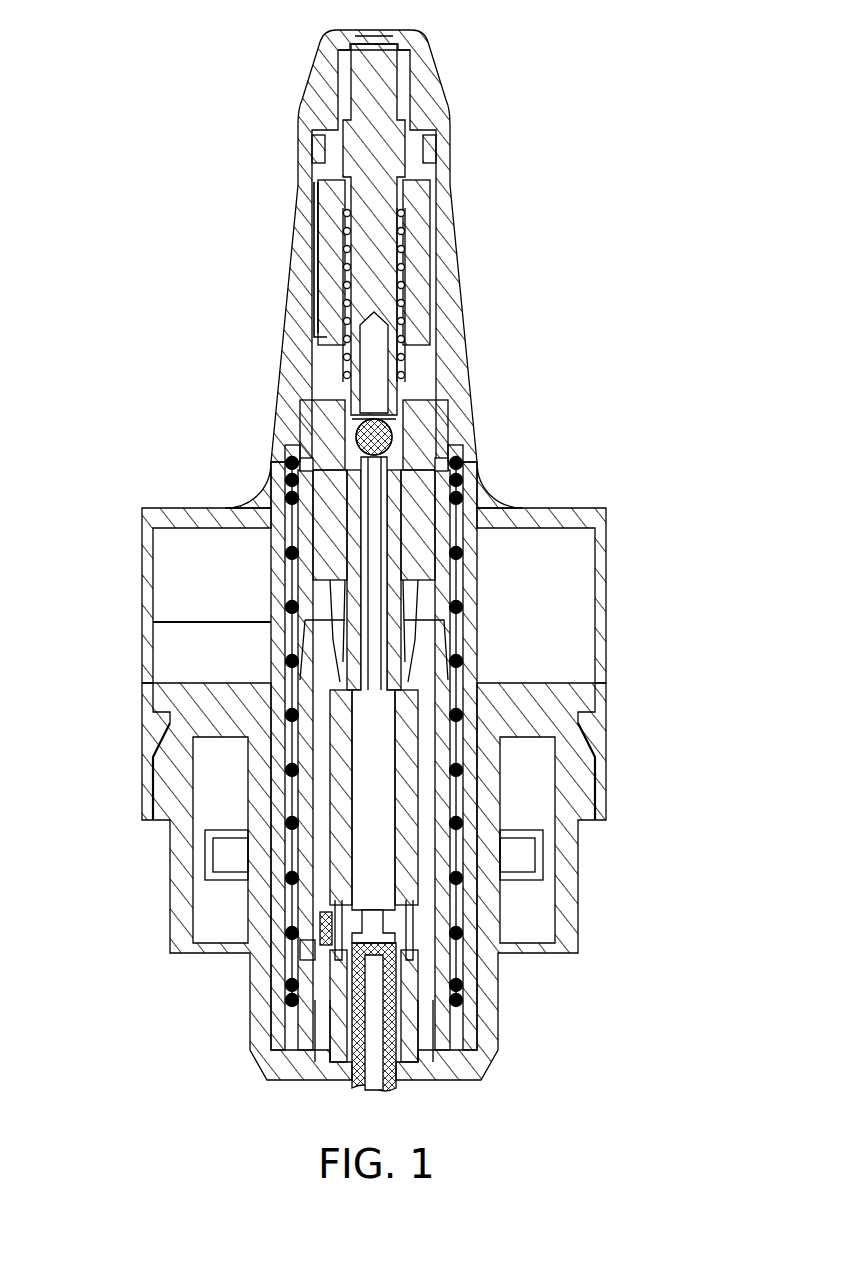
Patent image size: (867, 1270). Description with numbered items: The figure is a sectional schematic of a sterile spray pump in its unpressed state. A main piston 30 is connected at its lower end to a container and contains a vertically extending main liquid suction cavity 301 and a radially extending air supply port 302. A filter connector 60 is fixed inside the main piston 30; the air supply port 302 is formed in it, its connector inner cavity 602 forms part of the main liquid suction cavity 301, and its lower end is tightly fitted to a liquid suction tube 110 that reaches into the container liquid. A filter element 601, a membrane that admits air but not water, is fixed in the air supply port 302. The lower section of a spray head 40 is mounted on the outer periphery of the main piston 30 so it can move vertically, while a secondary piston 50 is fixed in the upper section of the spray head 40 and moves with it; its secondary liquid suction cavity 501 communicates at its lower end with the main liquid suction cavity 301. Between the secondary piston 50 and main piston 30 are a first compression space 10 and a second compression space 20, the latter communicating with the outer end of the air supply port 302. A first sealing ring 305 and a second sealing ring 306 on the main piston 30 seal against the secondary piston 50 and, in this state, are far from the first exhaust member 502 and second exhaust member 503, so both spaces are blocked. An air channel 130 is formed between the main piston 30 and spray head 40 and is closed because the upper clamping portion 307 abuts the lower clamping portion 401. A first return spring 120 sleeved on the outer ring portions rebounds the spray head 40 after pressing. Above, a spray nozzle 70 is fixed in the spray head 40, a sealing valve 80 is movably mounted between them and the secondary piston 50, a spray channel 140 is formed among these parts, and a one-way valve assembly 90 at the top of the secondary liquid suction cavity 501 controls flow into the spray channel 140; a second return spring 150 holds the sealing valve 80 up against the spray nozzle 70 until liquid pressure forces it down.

The first compression space 10 is at (462, 470).
The second compression space 20 is at (427, 790).
The main piston 30 is at (500, 985).
The spray head 40 is at (455, 322).
The secondary piston 50 is at (455, 553).
The filter connector 60 is at (418, 1022).
The spray nozzle 70 is at (402, 62).
The sealing valve 80 is at (385, 190).
The one-way valve assembly 90 is at (418, 437).
The liquid suction tube 110 is at (400, 1075).
The first return spring 120 is at (455, 607).
The air channel 130 is at (178, 622).
The spray channel 140 is at (313, 186).
The second return spring 150 is at (405, 262).
The main liquid suction cavity 301 is at (337, 1033).
The air supply port 302 is at (323, 930).
The first sealing ring 305 is at (305, 545).
The second sealing ring 306 is at (305, 632).
The upper clamping portion 307 is at (595, 700).
The lower clamping portion 401 is at (590, 733).
The secondary liquid suction cavity 501 is at (455, 503).
The first exhaust member 502 is at (290, 445).
The second exhaust member 503 is at (292, 400).
The filter element 601 is at (300, 947).
The connector inner cavity 602 is at (375, 857).